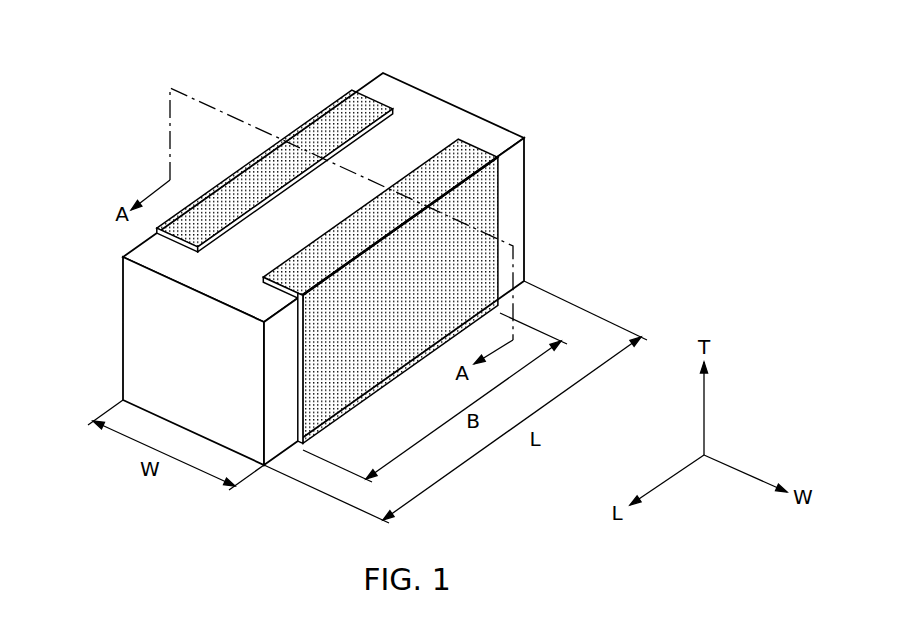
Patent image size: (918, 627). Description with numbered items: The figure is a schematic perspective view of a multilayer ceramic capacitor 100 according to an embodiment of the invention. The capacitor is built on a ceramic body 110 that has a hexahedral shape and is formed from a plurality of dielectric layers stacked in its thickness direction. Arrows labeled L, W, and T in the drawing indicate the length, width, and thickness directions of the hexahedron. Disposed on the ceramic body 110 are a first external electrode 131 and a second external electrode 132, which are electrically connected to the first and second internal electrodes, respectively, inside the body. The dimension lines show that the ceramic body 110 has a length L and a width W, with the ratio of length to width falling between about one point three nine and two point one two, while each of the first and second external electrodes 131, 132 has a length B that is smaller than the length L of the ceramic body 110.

The multilayer ceramic capacitor 100 is at (84, 46).
The ceramic body 110 is at (428, 112).
The first external electrode 131 is at (325, 120).
The second external electrode 132 is at (472, 160).